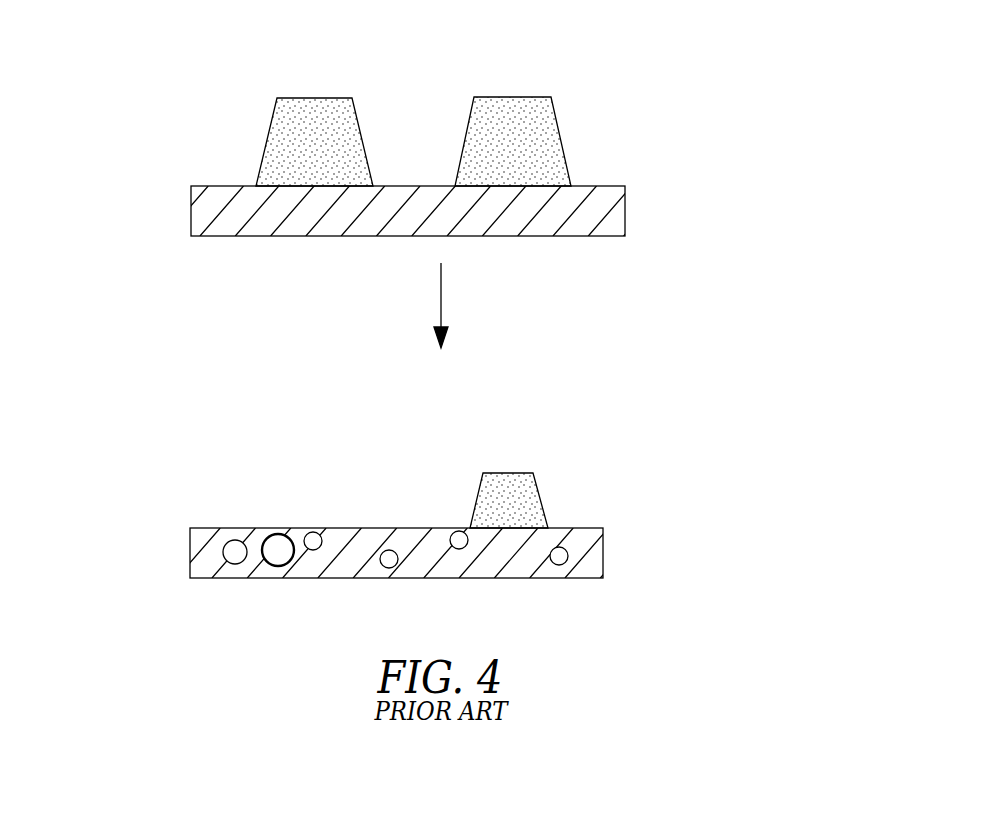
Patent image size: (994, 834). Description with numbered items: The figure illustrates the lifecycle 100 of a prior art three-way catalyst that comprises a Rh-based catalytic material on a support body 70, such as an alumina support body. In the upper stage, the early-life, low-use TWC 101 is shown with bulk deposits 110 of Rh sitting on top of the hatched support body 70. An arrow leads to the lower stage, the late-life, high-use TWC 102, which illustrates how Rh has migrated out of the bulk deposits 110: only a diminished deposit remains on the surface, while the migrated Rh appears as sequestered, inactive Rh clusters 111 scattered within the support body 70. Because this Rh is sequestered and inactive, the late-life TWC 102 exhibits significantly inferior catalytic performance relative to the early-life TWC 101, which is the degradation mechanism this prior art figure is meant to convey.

The support body 70 is at (625, 210).
The bulk deposits 110 is at (325, 95).
The inactive Rh clusters 111 is at (308, 532).
The lifecycle 100 is at (755, 125).
The early-life TWC 101 is at (160, 205).
The late-life TWC 102 is at (140, 558).